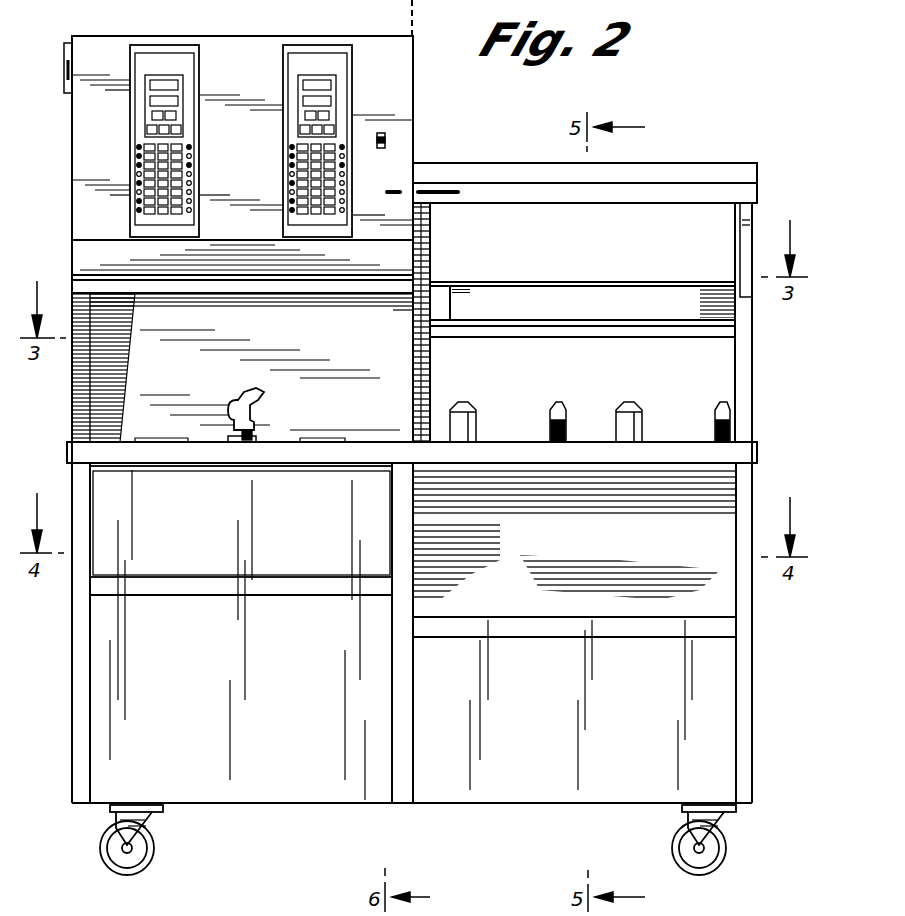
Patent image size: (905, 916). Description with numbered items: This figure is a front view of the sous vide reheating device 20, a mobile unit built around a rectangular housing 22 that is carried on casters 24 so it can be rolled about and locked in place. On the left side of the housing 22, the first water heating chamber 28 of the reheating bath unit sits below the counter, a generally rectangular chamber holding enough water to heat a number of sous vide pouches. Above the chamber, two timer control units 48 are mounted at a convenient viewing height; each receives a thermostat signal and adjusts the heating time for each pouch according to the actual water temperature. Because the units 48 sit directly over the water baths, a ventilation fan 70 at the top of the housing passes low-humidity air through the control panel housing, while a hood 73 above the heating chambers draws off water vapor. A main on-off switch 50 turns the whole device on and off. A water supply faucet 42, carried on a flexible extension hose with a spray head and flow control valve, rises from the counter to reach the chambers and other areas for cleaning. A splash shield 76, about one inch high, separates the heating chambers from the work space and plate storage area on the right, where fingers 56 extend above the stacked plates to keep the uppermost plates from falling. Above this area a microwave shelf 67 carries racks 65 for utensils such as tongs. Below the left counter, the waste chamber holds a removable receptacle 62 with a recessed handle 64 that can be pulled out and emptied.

The sous vide reheating device 20 is at (412, 419).
The rectangular housing 22 is at (250, 790).
The casters 24 is at (118, 838).
The first water heating chamber 28 is at (134, 438).
The water supply faucet 42 is at (256, 418).
The timer control unit 48 is at (201, 152).
The main on-off switch 50 is at (388, 136).
The fingers 56 is at (472, 402).
The removable receptacle 62 is at (196, 548).
The recessed handle 64 is at (345, 470).
The racks 65 is at (398, 196).
The microwave shelf 67 is at (735, 182).
The ventilation fan 70 is at (66, 62).
The hood 73 is at (82, 258).
The splash shield 76 is at (430, 415).